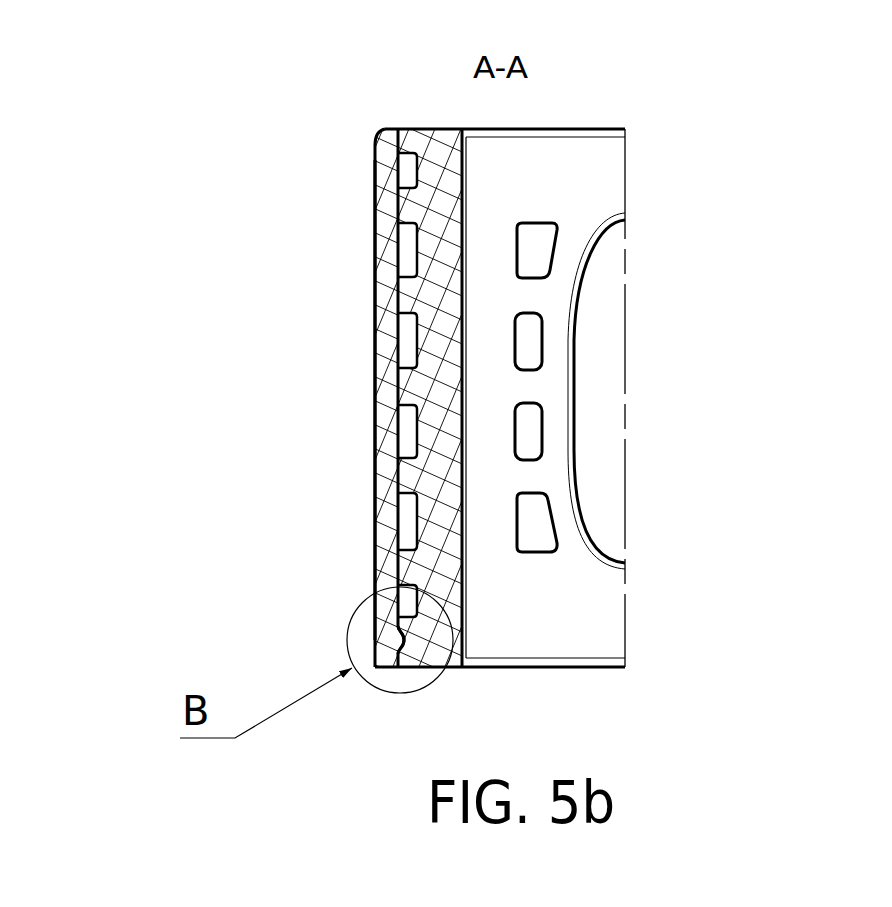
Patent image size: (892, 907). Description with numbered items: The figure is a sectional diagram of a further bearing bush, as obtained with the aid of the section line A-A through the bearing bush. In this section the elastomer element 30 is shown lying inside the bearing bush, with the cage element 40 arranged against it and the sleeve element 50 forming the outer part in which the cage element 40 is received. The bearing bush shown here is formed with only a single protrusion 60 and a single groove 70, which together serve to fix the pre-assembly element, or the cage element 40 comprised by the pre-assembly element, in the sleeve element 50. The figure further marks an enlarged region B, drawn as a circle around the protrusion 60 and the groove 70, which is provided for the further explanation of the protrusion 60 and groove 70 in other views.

The elastomer element 30 is at (523, 158).
The cage element 40 is at (440, 395).
The sleeve element 50 is at (383, 477).
The protrusion 60 is at (390, 638).
The groove 70 is at (412, 640).